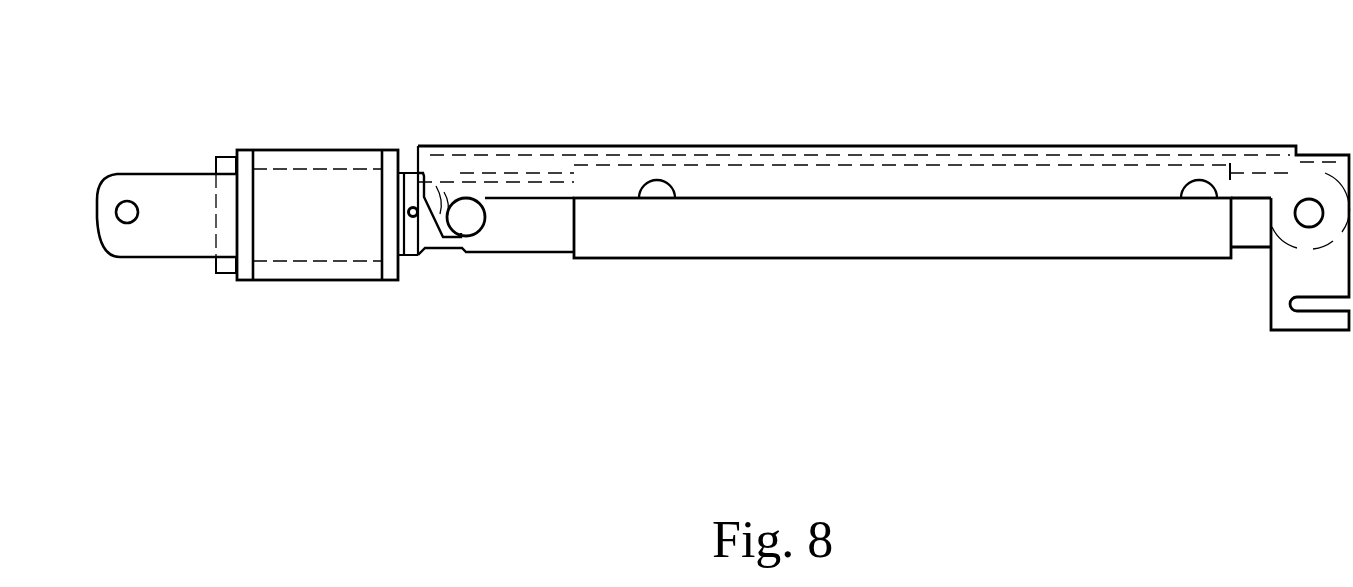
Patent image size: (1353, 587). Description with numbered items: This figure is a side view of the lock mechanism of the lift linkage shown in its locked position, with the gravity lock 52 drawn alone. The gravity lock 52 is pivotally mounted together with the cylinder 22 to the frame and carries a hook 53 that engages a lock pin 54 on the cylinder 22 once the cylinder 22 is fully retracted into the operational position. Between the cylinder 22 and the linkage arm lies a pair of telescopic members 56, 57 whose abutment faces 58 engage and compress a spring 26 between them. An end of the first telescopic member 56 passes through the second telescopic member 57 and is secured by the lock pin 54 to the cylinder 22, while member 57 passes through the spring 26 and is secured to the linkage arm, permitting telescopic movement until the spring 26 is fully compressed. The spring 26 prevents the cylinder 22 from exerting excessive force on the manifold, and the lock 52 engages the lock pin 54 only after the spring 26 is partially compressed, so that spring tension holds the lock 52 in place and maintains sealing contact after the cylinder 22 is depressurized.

The cylinder 22 is at (903, 250).
The spring 26 is at (317, 262).
The gravity lock 52 is at (943, 167).
The hook 53 is at (432, 195).
The lock pin 54 is at (472, 222).
The first telescopic member 56 is at (413, 237).
The second telescopic member 57 is at (165, 250).
The abutment faces 58 is at (387, 150).